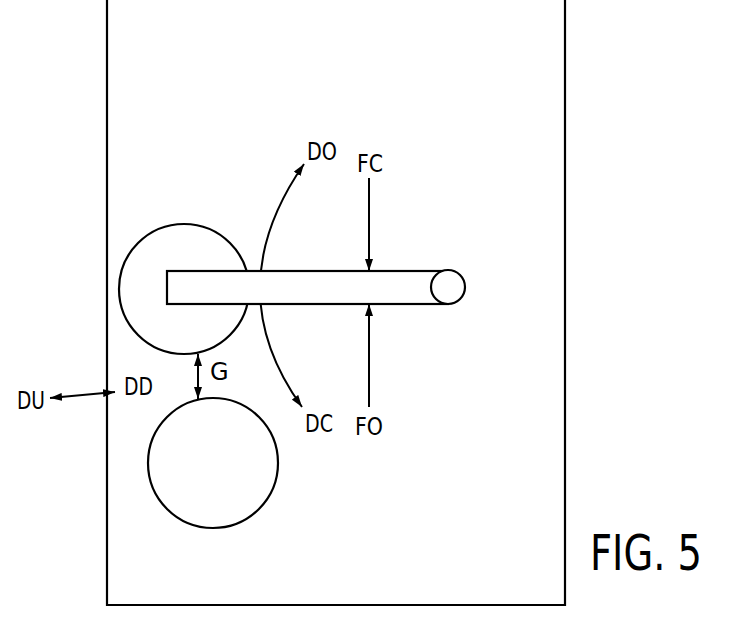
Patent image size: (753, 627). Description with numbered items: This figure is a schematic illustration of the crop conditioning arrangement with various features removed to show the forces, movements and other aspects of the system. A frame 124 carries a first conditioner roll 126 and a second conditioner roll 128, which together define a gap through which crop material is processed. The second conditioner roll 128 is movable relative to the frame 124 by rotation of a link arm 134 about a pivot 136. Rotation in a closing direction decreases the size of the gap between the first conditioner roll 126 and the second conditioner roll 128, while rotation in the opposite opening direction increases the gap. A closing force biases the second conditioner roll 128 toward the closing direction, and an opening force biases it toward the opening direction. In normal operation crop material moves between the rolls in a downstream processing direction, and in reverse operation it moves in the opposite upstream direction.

The frame 124 is at (107, 60).
The first conditioner roll 126 is at (167, 509).
The second conditioner roll 128 is at (143, 240).
The link arm 134 is at (408, 271).
The pivot 136 is at (460, 270).